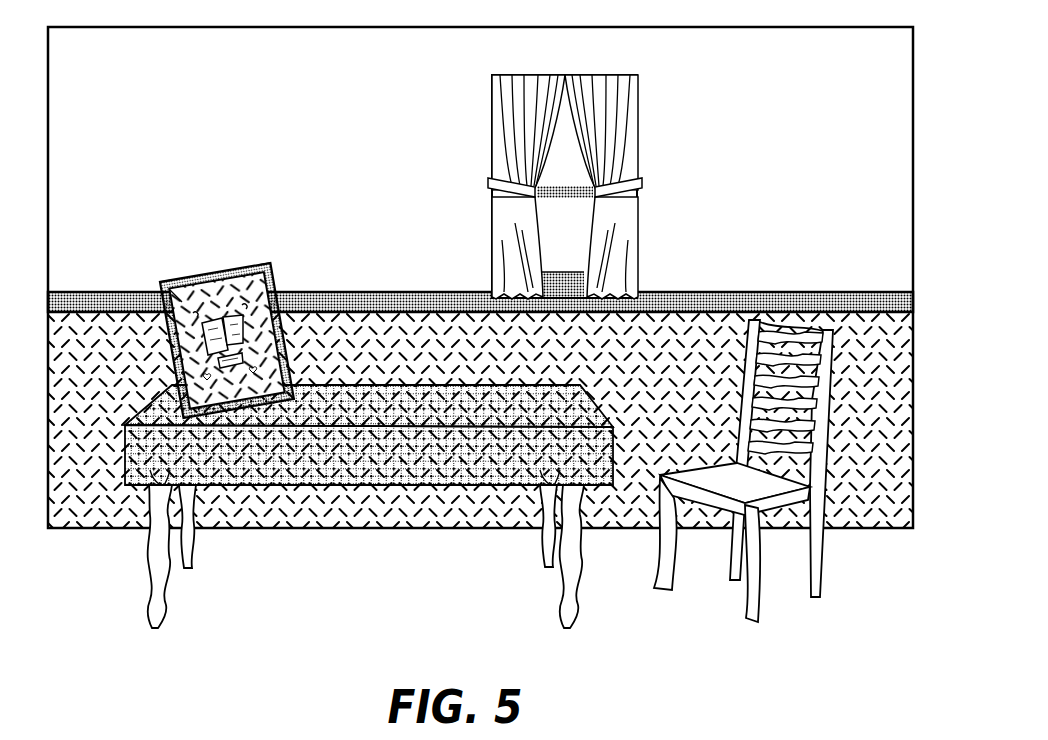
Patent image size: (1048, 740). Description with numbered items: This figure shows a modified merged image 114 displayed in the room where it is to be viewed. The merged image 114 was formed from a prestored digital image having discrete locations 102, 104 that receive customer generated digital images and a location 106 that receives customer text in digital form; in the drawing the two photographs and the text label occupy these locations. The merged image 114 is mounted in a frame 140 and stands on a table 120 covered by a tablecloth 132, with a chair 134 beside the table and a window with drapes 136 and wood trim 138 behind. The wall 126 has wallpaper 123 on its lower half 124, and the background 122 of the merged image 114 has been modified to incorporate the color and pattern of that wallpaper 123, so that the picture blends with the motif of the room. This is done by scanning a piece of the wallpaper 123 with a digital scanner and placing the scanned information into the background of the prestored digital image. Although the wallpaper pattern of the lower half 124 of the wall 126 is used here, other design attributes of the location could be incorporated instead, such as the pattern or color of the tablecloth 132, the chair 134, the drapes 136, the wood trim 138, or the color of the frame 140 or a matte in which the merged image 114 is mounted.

The discrete location 102 is at (193, 288).
The discrete location 104 is at (230, 322).
The discrete location 106 is at (244, 358).
The merged image 114 is at (185, 283).
The table 120 is at (566, 600).
The background 122 is at (160, 282).
The wallpaper 123 is at (850, 515).
The lower half 124 is at (640, 503).
The wall 126 is at (918, 441).
The tablecloth 132 is at (418, 487).
The chair 134 is at (755, 622).
The drapes 136 is at (638, 138).
The wood trim 138 is at (558, 270).
The frame 140 is at (255, 263).